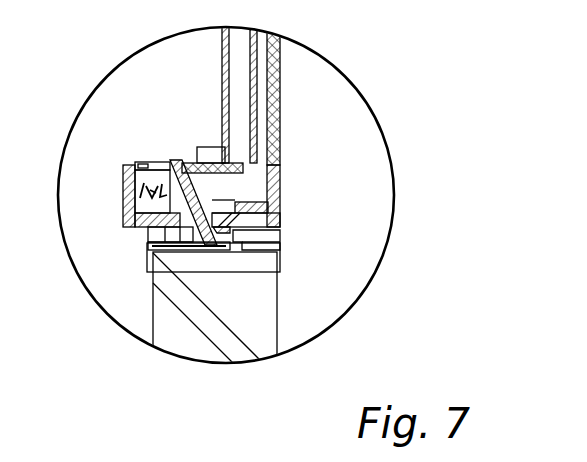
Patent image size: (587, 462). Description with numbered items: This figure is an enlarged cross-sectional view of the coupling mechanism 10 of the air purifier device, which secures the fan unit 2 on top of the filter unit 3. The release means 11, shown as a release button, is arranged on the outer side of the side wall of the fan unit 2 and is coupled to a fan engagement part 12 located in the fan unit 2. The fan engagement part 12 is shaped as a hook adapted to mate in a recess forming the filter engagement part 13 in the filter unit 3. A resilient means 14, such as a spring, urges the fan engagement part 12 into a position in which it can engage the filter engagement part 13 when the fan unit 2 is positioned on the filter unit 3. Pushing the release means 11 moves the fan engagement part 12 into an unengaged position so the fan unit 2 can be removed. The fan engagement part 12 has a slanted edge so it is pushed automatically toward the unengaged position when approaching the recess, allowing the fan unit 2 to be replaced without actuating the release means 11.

The fan unit 2 is at (282, 74).
The filter unit 3 is at (277, 327).
The coupling mechanism 10 is at (433, 100).
The release means 11 is at (280, 192).
The fan engagement part 12 is at (217, 245).
The filter engagement part 13 is at (222, 251).
The resilient means 14 is at (130, 195).